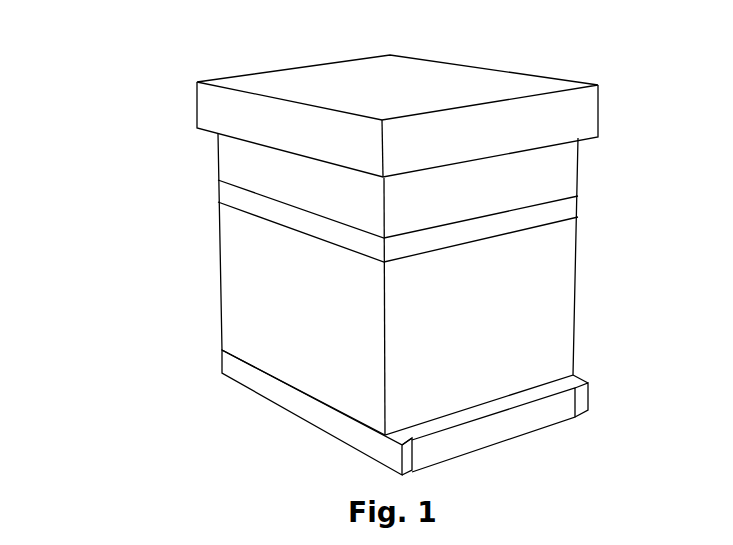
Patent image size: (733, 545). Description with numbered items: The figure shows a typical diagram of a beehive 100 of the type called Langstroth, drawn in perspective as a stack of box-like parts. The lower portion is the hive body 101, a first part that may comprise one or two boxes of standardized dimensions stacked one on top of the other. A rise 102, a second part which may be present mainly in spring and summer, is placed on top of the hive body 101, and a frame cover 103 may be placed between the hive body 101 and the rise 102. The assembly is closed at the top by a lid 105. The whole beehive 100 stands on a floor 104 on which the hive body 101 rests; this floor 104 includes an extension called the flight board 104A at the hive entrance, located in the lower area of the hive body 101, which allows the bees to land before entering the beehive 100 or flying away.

The beehive 100 is at (152, 93).
The hive body 101 is at (257, 275).
The rise 102 is at (230, 150).
The frame cover 103 is at (240, 198).
The floor 104 is at (290, 397).
The flight board 104A is at (452, 427).
The lid 105 is at (590, 118).